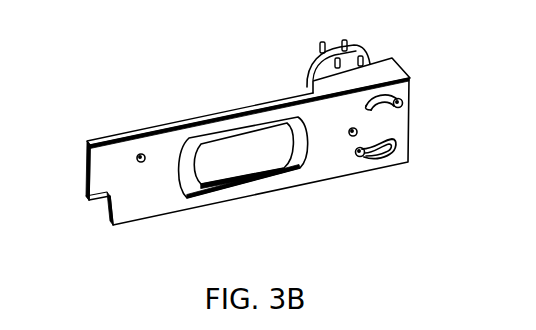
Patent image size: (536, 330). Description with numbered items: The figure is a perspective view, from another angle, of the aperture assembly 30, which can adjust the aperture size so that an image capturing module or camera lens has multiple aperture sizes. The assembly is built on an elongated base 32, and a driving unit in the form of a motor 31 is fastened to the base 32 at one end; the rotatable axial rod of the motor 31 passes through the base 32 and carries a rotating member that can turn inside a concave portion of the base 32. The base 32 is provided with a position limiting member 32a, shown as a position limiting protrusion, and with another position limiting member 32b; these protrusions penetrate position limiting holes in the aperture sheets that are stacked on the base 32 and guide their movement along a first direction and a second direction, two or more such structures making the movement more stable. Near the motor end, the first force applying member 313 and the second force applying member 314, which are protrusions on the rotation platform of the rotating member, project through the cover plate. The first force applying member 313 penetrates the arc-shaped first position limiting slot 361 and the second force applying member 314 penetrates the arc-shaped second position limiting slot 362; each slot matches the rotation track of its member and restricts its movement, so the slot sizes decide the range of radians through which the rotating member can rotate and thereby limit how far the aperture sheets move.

The aperture assembly 30 is at (100, 67).
The motor 31 is at (312, 75).
The base 32 is at (272, 105).
The position limiting member 32a is at (141, 154).
The position limiting member 32b is at (354, 137).
The first force applying member 313 is at (363, 158).
The second force applying member 314 is at (403, 101).
The first position limiting slot 361 is at (391, 143).
The second position limiting slot 362 is at (385, 105).